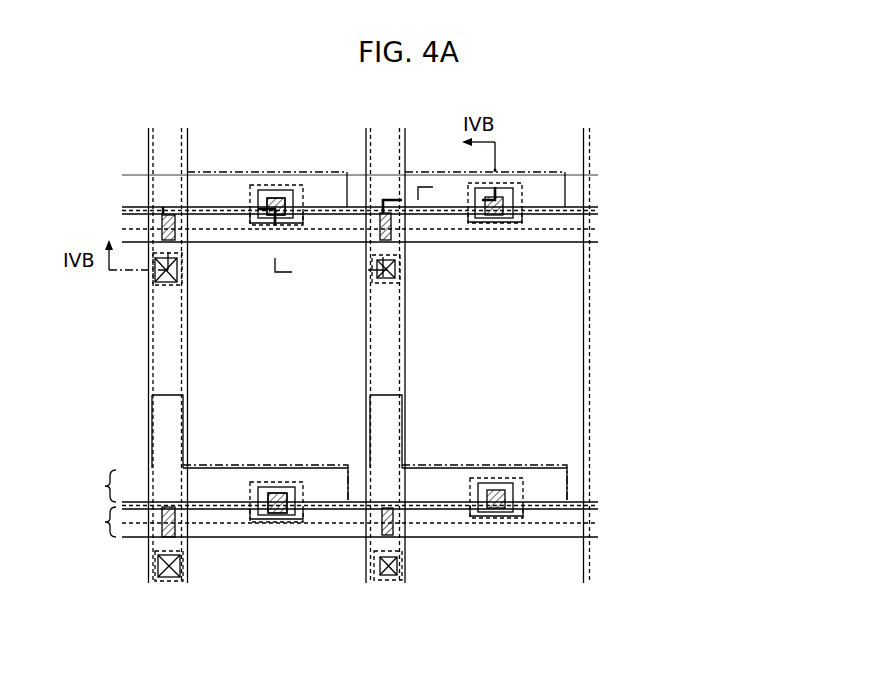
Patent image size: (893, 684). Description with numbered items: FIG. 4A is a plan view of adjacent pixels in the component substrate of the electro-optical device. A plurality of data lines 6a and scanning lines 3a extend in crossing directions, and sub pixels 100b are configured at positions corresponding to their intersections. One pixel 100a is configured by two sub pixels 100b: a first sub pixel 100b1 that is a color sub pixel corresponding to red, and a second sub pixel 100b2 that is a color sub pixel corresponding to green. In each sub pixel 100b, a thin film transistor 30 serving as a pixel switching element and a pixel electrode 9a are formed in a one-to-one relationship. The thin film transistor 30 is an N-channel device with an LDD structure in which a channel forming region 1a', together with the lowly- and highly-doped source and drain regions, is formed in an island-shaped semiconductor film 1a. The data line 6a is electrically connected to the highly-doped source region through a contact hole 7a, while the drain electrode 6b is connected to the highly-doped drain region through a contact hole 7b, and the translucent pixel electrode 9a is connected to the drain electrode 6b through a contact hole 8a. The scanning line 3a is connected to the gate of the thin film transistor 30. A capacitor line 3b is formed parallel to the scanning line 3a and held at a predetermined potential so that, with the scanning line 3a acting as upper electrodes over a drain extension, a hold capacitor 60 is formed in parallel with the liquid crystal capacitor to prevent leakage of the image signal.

The data line 6a is at (187, 122).
The drain electrode 6b is at (268, 482).
The pixel electrode 9a is at (535, 258).
The semiconductor film 1a is at (278, 421).
The channel forming region 1a' is at (311, 385).
The contact hole 7a is at (180, 565).
The contact hole 7b is at (278, 493).
The contact hole 8a is at (277, 355).
The scanning line 3a is at (340, 383).
The capacitor line 3b is at (340, 342).
The thin film transistor 30 is at (207, 530).
The hold capacitor 60 is at (196, 484).
The sub pixel 100b is at (345, 336).
The first sub pixel 100b1 is at (340, 337).
The second sub pixel 100b2 is at (540, 357).
The pixel 100a is at (749, 288).